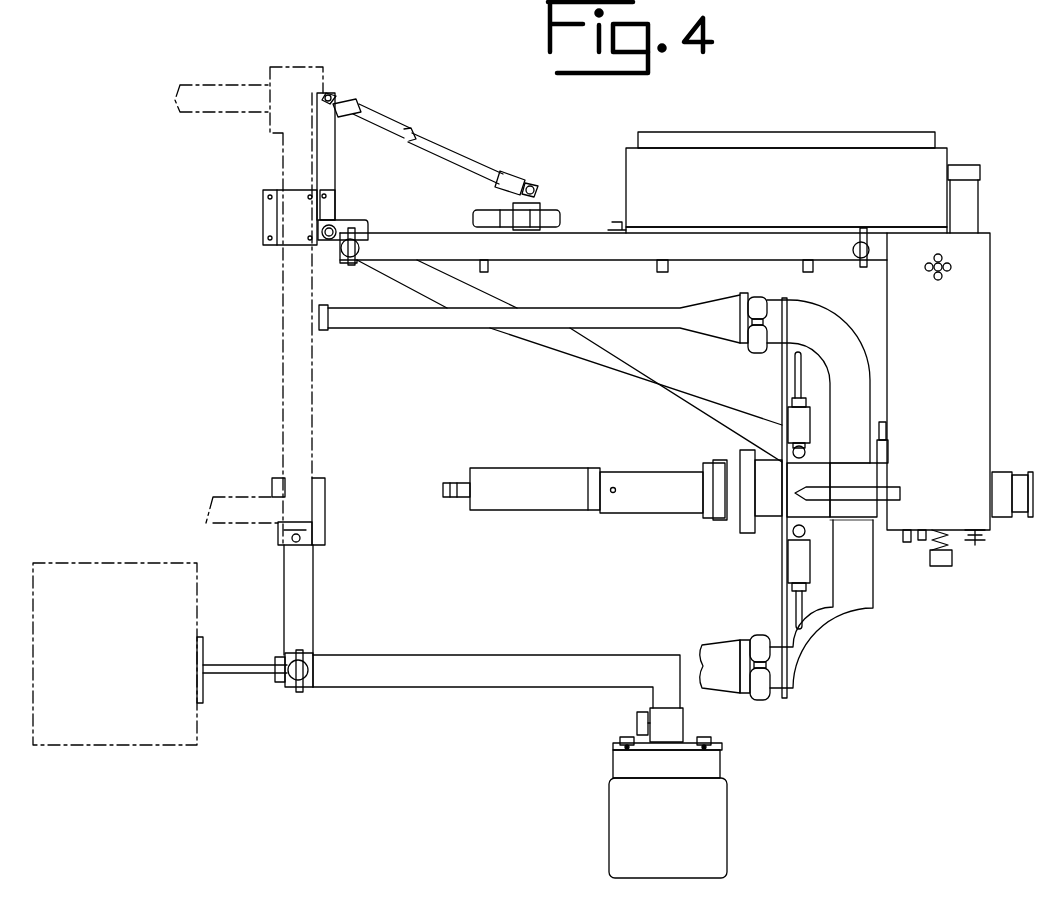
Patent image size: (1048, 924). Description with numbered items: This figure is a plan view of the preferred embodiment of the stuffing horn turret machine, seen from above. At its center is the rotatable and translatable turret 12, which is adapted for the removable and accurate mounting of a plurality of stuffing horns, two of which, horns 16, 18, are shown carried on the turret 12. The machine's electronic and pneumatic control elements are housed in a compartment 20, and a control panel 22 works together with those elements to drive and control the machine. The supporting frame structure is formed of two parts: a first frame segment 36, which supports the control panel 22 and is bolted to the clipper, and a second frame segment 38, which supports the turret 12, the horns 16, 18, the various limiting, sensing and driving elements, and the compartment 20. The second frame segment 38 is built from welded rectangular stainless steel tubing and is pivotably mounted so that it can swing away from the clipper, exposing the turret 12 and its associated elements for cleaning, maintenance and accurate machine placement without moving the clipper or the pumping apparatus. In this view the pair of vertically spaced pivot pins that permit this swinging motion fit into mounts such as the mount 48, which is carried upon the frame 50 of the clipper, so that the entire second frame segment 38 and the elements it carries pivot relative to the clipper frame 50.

The turret 12 is at (772, 510).
The stuffing horn 16 is at (390, 332).
The stuffing horn 18 is at (730, 683).
The compartment 20 is at (857, 163).
The control panel 22 is at (720, 808).
The first frame segment 36 is at (388, 687).
The second frame segment 38 is at (655, 385).
The mount 48 is at (328, 195).
The frame 50 is at (292, 340).